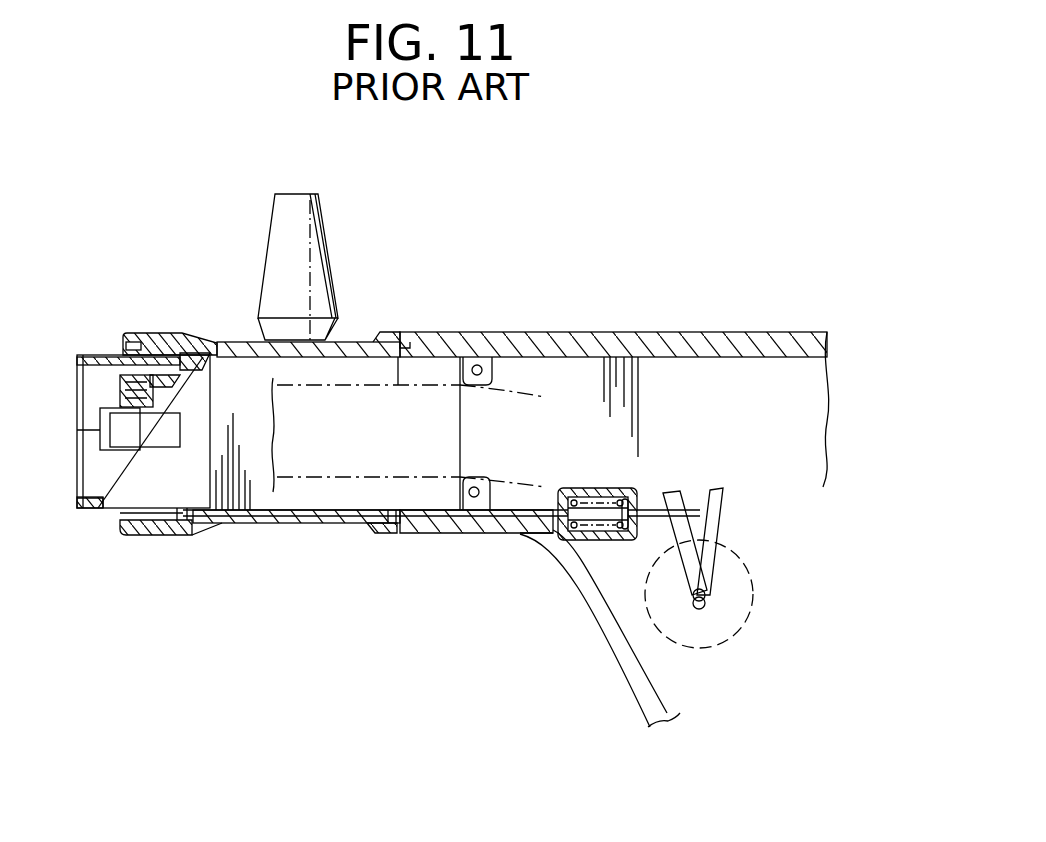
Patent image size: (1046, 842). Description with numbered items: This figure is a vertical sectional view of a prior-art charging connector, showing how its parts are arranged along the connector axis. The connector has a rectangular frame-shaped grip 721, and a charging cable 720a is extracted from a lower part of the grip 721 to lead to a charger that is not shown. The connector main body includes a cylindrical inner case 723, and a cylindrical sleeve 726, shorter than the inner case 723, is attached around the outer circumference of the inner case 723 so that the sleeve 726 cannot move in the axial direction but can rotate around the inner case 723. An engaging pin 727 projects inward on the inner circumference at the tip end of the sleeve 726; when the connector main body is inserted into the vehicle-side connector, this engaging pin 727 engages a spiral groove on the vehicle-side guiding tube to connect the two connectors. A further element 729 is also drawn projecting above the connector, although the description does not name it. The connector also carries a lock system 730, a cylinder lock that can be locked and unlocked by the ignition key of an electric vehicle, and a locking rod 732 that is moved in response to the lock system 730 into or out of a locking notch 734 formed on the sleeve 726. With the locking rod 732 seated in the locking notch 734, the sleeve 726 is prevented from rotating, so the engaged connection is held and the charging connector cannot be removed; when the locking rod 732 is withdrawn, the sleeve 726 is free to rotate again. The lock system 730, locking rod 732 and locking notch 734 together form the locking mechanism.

The grip 721 is at (723, 338).
The charging cable 720a is at (403, 332).
The sleeve 726 is at (347, 330).
The knob 729 is at (318, 234).
The engaging pin 727 is at (130, 343).
The inner case 723 is at (100, 355).
The locking notch 734 is at (395, 510).
The locking rod 732 is at (553, 522).
The lock system 730 is at (653, 638).